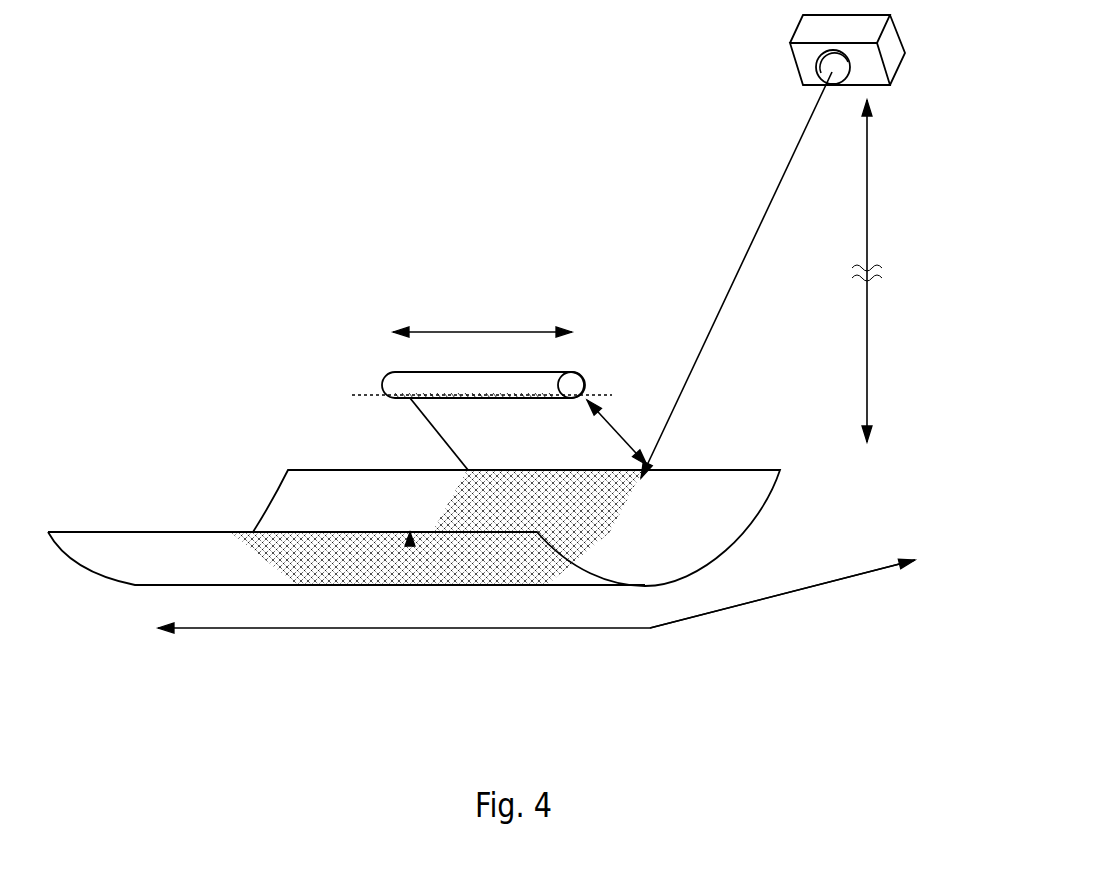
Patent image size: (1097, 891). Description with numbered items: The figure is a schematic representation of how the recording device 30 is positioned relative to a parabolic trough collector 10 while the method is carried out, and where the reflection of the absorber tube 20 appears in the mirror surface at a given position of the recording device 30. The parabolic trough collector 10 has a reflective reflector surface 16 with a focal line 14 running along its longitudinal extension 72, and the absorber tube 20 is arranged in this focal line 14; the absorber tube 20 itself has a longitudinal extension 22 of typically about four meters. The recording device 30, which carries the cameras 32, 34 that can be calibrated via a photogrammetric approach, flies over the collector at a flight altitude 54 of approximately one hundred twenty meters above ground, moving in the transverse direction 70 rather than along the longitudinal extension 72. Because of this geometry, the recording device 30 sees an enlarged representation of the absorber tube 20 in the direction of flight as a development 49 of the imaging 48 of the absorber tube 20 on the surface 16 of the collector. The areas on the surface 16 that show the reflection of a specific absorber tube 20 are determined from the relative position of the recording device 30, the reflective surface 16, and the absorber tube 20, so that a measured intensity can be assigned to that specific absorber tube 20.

The parabolic trough collector 10 is at (718, 458).
The focal line 14 is at (602, 395).
The reflector surface 16 is at (298, 496).
The absorber tube 20 is at (380, 385).
The longitudinal extension 22 is at (480, 330).
The recording device 30 is at (790, 62).
The camera 32 is at (833, 67).
The camera 34 is at (834, 63).
The imaging 48 is at (452, 505).
The development 49 is at (612, 538).
The flight altitude 54 is at (868, 192).
The transverse direction 70 is at (782, 592).
The longitudinal extension 72 is at (412, 632).